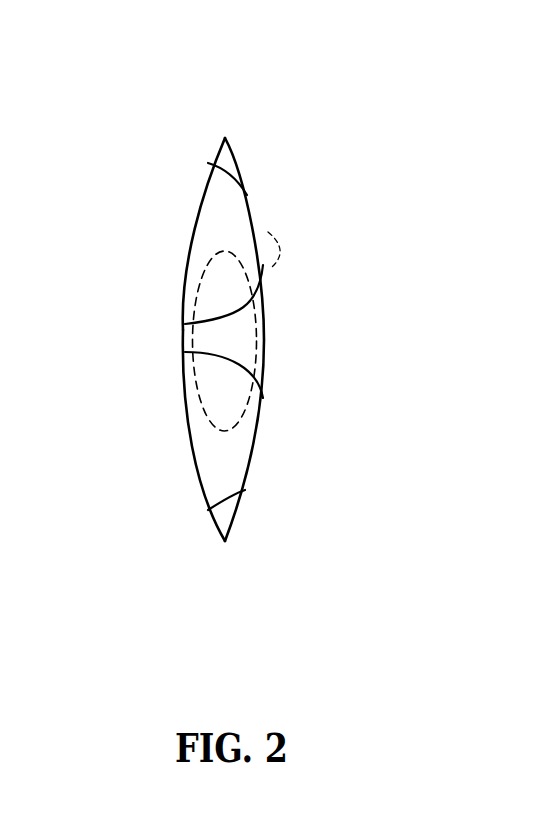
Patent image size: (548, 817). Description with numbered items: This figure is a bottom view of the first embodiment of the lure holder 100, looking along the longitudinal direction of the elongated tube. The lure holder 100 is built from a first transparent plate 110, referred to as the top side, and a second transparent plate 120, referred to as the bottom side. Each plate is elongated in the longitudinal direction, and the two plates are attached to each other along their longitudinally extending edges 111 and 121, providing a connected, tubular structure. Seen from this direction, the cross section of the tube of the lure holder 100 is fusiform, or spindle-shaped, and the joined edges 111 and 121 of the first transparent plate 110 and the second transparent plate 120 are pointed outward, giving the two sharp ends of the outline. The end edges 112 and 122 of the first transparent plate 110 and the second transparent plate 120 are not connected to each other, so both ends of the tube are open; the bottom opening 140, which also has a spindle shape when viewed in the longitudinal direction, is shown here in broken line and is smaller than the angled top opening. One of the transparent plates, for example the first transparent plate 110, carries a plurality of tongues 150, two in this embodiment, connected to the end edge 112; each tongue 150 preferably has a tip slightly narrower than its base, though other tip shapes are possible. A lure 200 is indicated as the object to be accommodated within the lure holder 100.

The lure holder 100 is at (200, 83).
The first transparent plate 110 is at (248, 188).
The longitudinally extending edge 111 is at (228, 138).
The end edge 112 is at (265, 393).
The second transparent plate 120 is at (204, 185).
The longitudinally extending edge 121 is at (223, 138).
The end edge 122 is at (187, 430).
The bottom opening 140 is at (238, 335).
The tongue 150 is at (187, 392).
The lure 200 is at (268, 228).